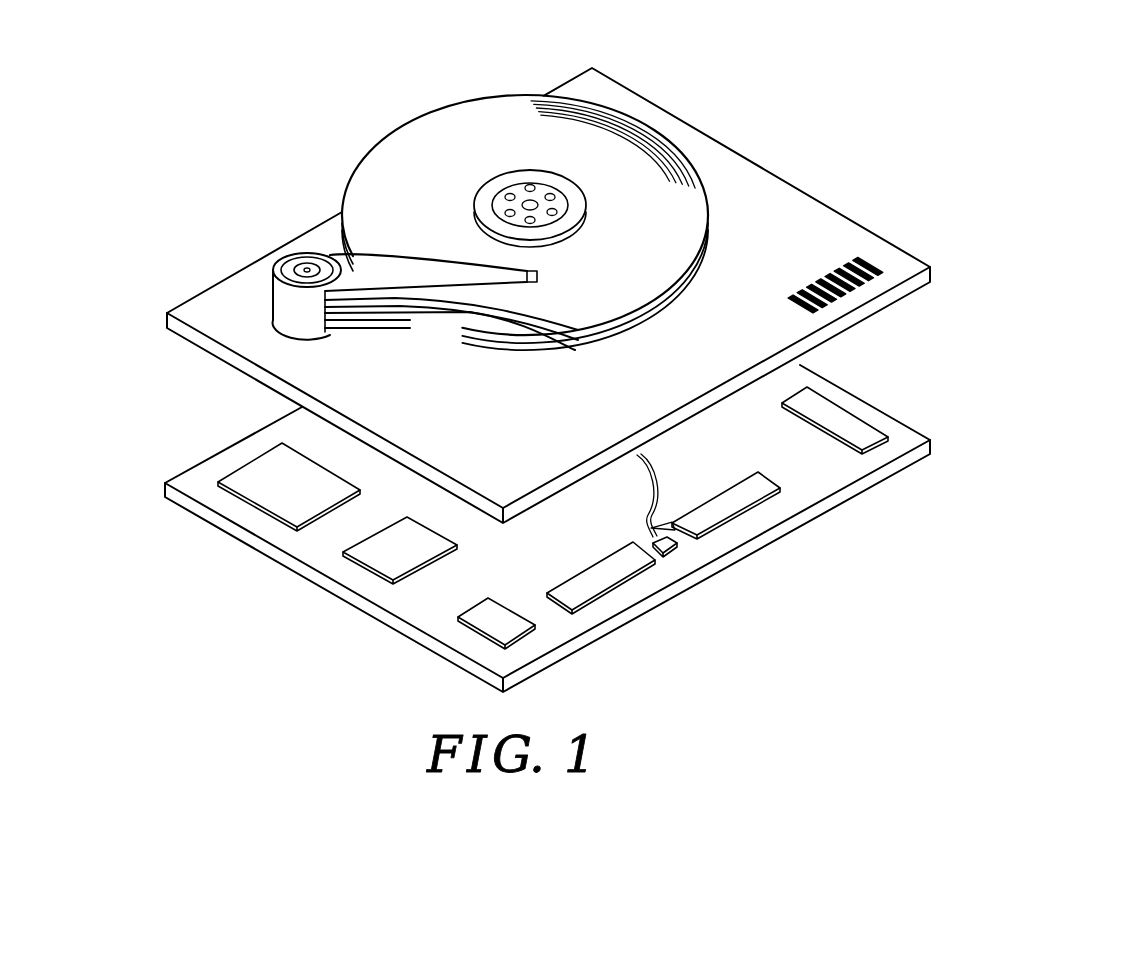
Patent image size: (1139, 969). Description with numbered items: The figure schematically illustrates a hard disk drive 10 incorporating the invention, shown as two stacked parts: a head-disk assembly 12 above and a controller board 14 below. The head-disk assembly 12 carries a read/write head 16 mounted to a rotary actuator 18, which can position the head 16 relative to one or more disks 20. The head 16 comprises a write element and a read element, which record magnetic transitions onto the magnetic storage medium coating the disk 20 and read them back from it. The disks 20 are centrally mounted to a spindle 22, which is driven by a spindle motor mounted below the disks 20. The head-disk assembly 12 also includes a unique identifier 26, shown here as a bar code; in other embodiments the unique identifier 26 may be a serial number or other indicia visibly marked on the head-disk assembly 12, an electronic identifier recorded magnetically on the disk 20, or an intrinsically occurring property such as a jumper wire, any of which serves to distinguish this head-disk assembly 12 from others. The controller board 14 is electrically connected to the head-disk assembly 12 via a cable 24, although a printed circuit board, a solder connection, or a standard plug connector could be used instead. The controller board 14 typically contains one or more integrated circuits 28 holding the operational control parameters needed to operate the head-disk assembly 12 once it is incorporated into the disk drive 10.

The disk drive 10 is at (948, 337).
The head-disk assembly 12 is at (705, 127).
The controller board 14 is at (903, 487).
The read/write head 16 is at (533, 288).
The rotary actuator 18 is at (308, 267).
The disk 20 is at (417, 157).
The spindle 22 is at (535, 197).
The cable 24 is at (705, 530).
The unique identifier 26 is at (882, 257).
The integrated circuit 28 is at (363, 570).